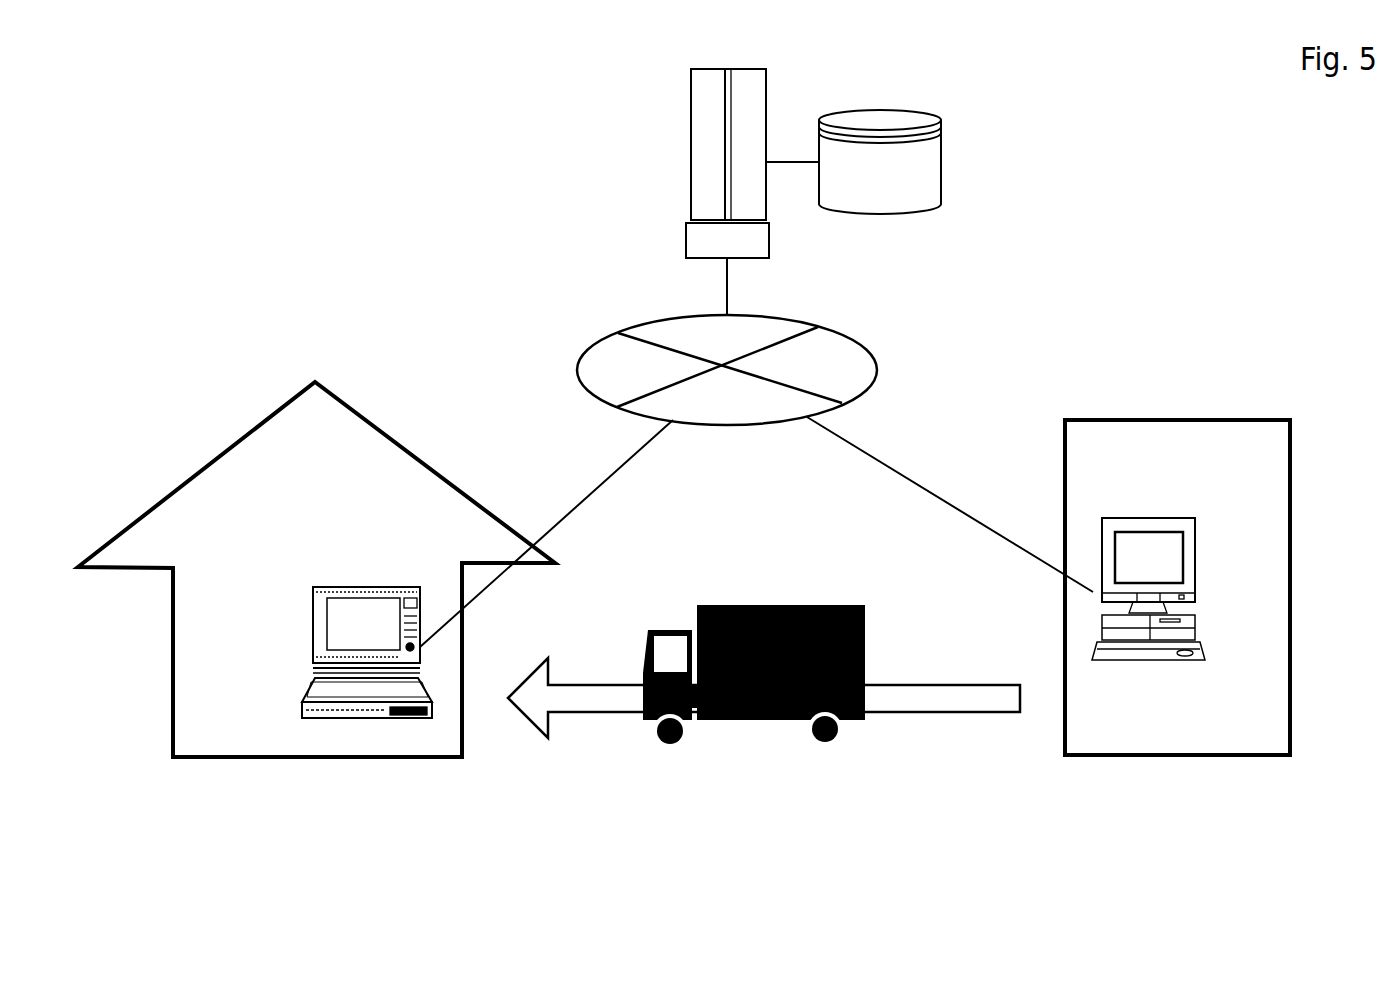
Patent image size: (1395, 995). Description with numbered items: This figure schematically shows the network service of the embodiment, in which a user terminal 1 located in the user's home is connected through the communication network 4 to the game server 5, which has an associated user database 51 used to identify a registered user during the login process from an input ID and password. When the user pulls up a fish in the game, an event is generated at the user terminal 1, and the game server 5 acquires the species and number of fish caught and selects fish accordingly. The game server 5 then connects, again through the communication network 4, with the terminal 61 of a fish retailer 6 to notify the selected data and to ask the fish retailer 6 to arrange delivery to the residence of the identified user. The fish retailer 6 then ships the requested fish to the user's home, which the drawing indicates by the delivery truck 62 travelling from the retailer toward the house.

The user terminal 1 is at (278, 667).
The communication network 4 is at (865, 367).
The game server 5 is at (757, 242).
The user database 51 is at (928, 187).
The fish retailer 6 is at (1277, 512).
The terminal of the fish retailer 61 is at (1195, 575).
The delivery truck 62 is at (857, 720).